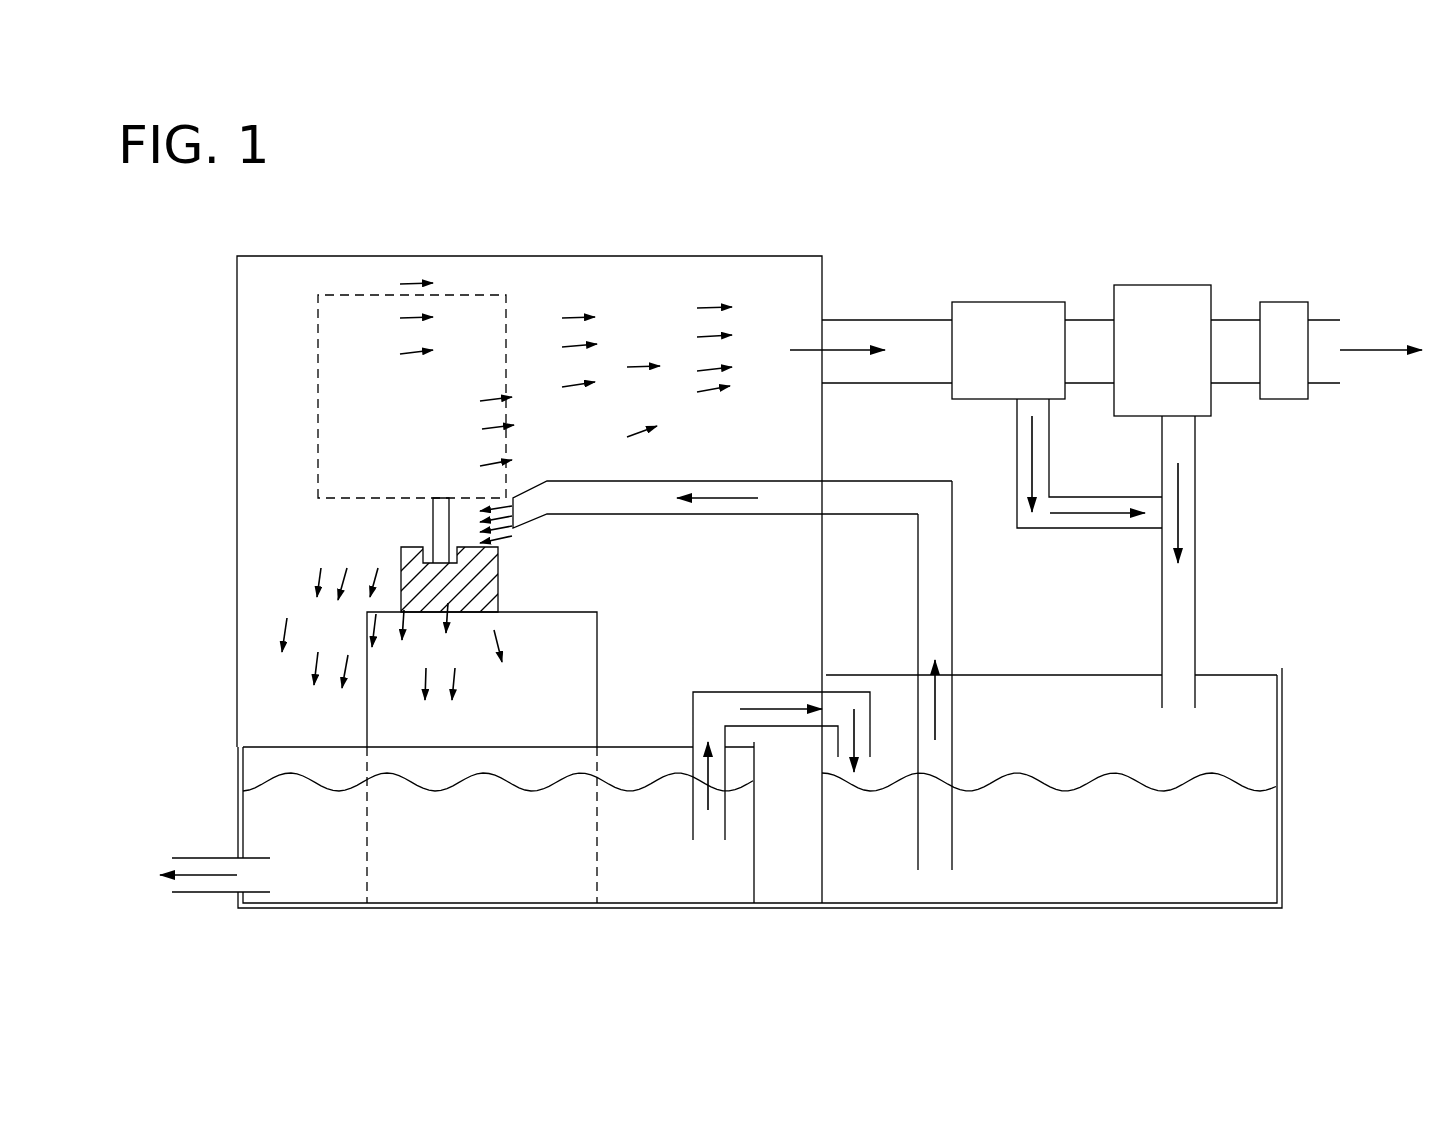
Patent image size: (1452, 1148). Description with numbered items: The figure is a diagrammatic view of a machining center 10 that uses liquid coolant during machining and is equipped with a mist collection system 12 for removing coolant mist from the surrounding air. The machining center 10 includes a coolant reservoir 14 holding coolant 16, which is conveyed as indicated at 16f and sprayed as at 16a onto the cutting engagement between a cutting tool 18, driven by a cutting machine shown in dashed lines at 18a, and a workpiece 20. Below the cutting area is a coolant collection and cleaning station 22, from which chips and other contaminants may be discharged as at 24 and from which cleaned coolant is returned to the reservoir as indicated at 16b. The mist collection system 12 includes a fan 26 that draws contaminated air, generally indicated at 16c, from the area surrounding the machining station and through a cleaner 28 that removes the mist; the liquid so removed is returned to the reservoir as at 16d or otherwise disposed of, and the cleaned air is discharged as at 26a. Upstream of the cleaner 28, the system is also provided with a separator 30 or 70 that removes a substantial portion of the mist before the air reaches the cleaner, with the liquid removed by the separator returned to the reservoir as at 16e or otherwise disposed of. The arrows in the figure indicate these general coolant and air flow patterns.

The machining center 10 is at (410, 232).
The mist collection system 12 is at (1268, 442).
The coolant reservoir 14 is at (1284, 746).
The coolant 16 is at (1090, 861).
The coolant spray 16a is at (510, 540).
The cleaned coolant return 16b is at (800, 692).
The contaminated air flow 16c is at (645, 325).
The liquid return from cleaner 16d is at (1195, 518).
The liquid return from separator 16e is at (1080, 533).
The coolant conveyance 16f is at (887, 508).
The cutting tool 18 is at (433, 520).
The cutting machine 18a is at (318, 352).
The workpiece 20 is at (401, 555).
The coolant collection and cleaning station 22 is at (243, 750).
The contaminant discharge 24 is at (217, 857).
The fan 26 is at (1288, 302).
The cleaned air discharge 26a is at (1365, 350).
The cleaner 28 is at (1165, 285).
The separator 30 is at (1025, 279).
The separator 70 is at (982, 302).